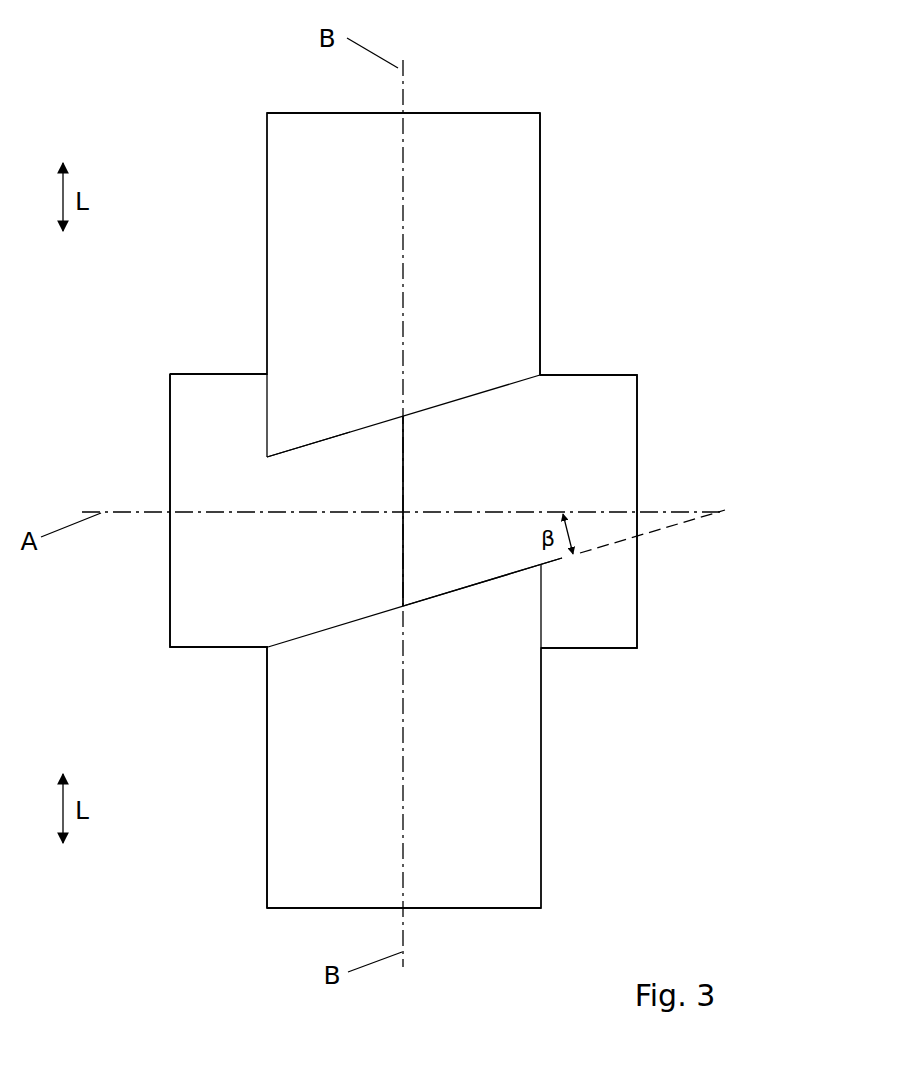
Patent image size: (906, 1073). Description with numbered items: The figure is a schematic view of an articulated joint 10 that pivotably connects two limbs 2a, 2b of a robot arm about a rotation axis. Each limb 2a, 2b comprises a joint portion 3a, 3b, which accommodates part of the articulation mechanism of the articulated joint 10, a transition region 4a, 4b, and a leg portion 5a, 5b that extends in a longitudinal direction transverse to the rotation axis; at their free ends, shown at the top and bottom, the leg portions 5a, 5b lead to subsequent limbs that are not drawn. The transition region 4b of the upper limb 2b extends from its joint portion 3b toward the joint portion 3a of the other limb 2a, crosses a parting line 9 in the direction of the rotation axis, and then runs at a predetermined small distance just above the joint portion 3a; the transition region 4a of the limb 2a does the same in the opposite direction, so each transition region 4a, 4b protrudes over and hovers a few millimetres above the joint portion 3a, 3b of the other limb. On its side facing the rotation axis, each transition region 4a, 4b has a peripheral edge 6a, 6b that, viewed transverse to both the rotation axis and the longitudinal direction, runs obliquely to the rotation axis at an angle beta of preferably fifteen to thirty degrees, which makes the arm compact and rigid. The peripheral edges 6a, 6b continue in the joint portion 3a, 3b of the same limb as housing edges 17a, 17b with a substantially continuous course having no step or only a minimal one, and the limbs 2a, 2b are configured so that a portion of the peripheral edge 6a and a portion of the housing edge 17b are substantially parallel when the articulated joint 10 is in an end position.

The limb 2a is at (613, 437).
The limb 2b is at (283, 193).
The joint portion 3a is at (622, 553).
The joint portion 3b is at (193, 578).
The transition region 4a is at (320, 685).
The transition region 4b is at (457, 368).
The leg portion 5a is at (318, 845).
The leg portion 5b is at (518, 152).
The peripheral edge 6a is at (320, 632).
The peripheral edge 6b is at (490, 389).
The parting line 9 is at (403, 473).
The articulated joint 10 is at (720, 460).
The housing edge 17a is at (492, 582).
The housing edge 17b is at (348, 430).